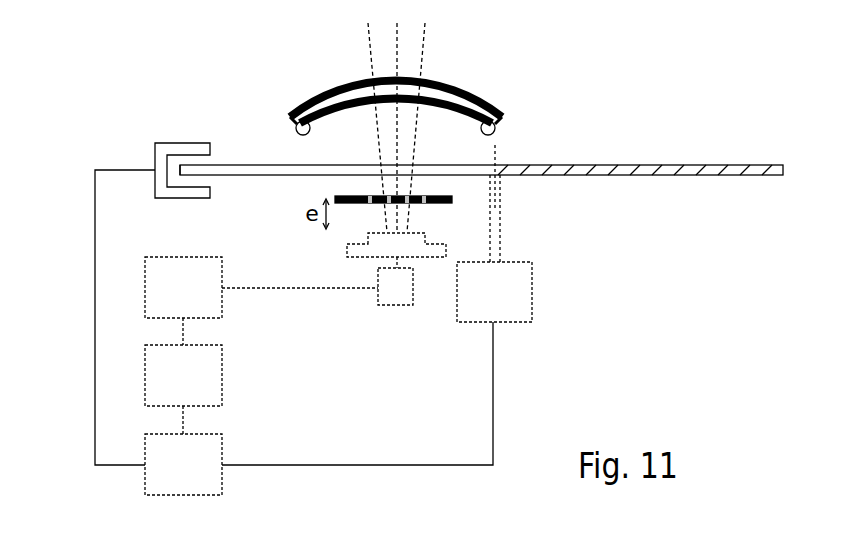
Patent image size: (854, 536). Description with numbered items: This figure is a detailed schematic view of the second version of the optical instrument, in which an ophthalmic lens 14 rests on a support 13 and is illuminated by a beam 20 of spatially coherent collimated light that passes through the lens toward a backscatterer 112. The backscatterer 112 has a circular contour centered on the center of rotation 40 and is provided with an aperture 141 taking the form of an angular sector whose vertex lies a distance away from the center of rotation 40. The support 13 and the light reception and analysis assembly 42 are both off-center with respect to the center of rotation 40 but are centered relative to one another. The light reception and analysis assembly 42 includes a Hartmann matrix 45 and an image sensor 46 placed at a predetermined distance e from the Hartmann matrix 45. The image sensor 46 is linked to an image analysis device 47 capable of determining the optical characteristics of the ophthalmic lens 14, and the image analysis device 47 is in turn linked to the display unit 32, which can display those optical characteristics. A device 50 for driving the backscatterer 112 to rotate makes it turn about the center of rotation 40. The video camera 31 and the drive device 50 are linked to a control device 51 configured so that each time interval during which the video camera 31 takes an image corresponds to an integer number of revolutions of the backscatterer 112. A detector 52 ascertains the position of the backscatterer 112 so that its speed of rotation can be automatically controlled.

The ophthalmic lens 14 is at (327, 97).
The beam 20 is at (428, 42).
The support 13 is at (296, 128).
The backscatterer 112 is at (643, 165).
The aperture 141 is at (225, 167).
The detector 52 is at (157, 150).
The light reception and analysis assembly 42 is at (275, 208).
The center of rotation 40 is at (495, 168).
The Hartmann matrix 45 is at (447, 203).
The image sensor 46 is at (428, 250).
The image analysis device 47 is at (395, 295).
The device for driving the backscatterer to rotate 50 is at (377, 363).
The display unit 32 is at (261, 287).
The video camera 31 is at (183, 376).
The control device 51 is at (183, 464).